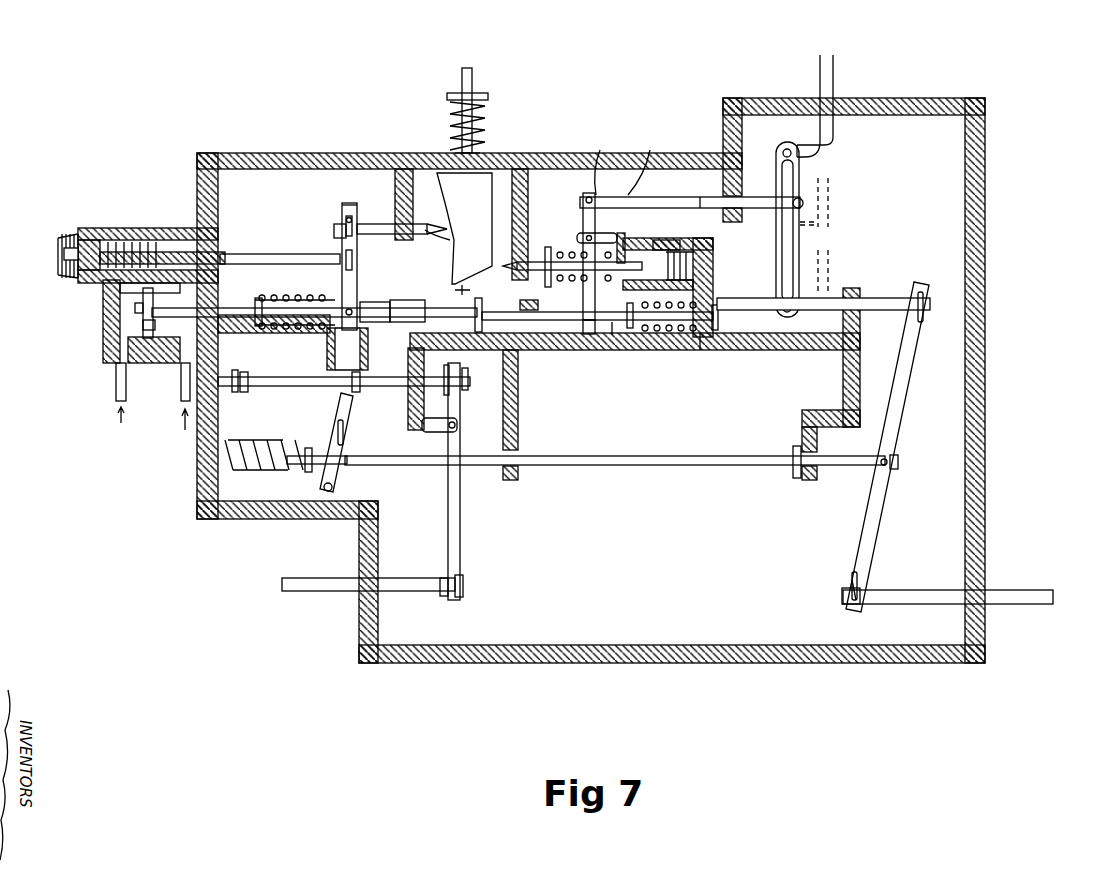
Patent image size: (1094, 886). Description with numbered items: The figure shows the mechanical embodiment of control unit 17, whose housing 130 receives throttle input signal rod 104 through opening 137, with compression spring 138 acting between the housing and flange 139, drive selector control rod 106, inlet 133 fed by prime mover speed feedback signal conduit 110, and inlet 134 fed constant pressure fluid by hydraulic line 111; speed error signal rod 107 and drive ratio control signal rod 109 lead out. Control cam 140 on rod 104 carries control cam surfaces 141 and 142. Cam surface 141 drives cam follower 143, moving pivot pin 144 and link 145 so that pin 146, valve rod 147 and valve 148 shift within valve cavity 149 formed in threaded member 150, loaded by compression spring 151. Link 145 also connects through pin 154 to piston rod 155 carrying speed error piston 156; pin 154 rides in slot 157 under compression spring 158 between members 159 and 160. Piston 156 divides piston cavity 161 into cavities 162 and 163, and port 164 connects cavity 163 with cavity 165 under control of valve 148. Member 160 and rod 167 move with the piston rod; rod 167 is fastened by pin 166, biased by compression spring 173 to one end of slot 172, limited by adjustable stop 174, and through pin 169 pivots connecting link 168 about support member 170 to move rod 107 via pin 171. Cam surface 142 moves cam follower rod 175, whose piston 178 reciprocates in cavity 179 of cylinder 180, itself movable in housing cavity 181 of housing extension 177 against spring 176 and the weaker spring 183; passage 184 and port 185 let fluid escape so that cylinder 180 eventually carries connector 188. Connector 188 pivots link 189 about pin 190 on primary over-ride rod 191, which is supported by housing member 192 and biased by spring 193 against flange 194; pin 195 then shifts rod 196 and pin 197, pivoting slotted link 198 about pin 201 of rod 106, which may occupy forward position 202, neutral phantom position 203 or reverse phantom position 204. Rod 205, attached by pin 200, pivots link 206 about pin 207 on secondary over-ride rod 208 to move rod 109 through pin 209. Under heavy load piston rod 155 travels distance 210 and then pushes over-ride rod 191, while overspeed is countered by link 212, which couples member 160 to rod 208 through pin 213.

The control unit 17 is at (1019, 178).
The throttle input signal rod 104 is at (472, 72).
The drive selector control rod 106 is at (834, 78).
The speed error signal rod 107 is at (305, 578).
The drive ratio control signal rod 109 is at (1010, 590).
The prime mover speed feedback signal conduit 110 is at (184, 420).
The hydraulic line 111 is at (116, 415).
The housing 130 is at (986, 445).
The inlet 133 is at (180, 362).
The inlet 134 is at (110, 362).
The opening 137 is at (490, 153).
The compression spring 138 is at (486, 122).
The flange 139 is at (488, 97).
The control cam 140 is at (480, 206).
The control cam surface 141 is at (428, 238).
The control cam surface 142 is at (486, 292).
The cam follower 143 is at (372, 238).
The pivot pin 144 is at (342, 205).
The link 145 is at (342, 276).
The pin 146 is at (346, 220).
The valve rod 147 is at (262, 254).
The valve 148 is at (150, 228).
The valve cavity 149 is at (64, 258).
The member 150 is at (62, 240).
The compression spring 151 is at (132, 240).
The pin 154 is at (368, 300).
The piston rod 155 is at (230, 305).
The speed error piston 156 is at (108, 298).
The slot 157 is at (412, 295).
The compression spring 158 is at (277, 329).
The member 159 is at (256, 324).
The member 160 is at (368, 348).
The piston cavity 161 is at (118, 286).
The cavity 162 is at (130, 325).
The cavity 163 is at (158, 312).
The port 164 is at (150, 305).
The cavity 165 is at (236, 252).
The pin 166 is at (330, 388).
The rod 167 is at (362, 393).
The connecting link 168 is at (460, 528).
The pin 169 is at (462, 372).
The support member 170 is at (440, 432).
The pin 171 is at (465, 582).
The slot 172 is at (366, 348).
The compression spring 173 is at (258, 440).
The adjustable stop 174 is at (240, 372).
The cam follower rod 175 is at (460, 254).
The spring 176 is at (563, 250).
The housing extension 177 is at (718, 310).
The piston 178 is at (628, 312).
The cavity 179 is at (655, 240).
The cylinder 180 is at (630, 198).
The housing cavity 181 is at (712, 190).
The spring 183 is at (690, 240).
The passage 184 is at (572, 278).
The port 185 is at (700, 262).
The connector 188 is at (605, 223).
The link 189 is at (583, 208).
The pin 190 is at (596, 336).
The primary over-ride rod 191 is at (614, 336).
The housing member 192 is at (530, 332).
The spring 193 is at (705, 338).
The flange 194 is at (665, 333).
The pin 195 is at (612, 164).
The rod 196 is at (652, 164).
The pin 197 is at (800, 190).
The slotted link 198 is at (798, 244).
The pin 200 is at (774, 316).
The pin 201 is at (795, 132).
The position 202 is at (834, 146).
The phantom position 203 is at (830, 264).
The phantom position 204 is at (830, 214).
The rod 205 is at (880, 298).
The link 206 is at (896, 416).
The pin 207 is at (896, 462).
The secondary over-ride rod 208 is at (592, 468).
The pin 209 is at (866, 590).
The distance 210 is at (458, 290).
The link 212 is at (340, 425).
The pin 213 is at (345, 462).